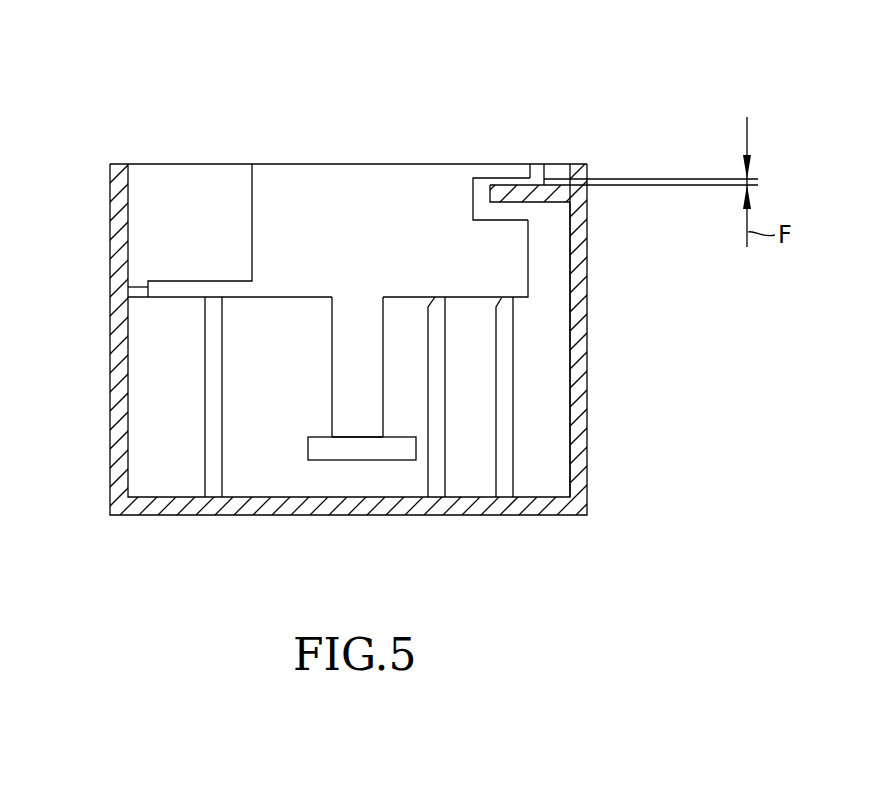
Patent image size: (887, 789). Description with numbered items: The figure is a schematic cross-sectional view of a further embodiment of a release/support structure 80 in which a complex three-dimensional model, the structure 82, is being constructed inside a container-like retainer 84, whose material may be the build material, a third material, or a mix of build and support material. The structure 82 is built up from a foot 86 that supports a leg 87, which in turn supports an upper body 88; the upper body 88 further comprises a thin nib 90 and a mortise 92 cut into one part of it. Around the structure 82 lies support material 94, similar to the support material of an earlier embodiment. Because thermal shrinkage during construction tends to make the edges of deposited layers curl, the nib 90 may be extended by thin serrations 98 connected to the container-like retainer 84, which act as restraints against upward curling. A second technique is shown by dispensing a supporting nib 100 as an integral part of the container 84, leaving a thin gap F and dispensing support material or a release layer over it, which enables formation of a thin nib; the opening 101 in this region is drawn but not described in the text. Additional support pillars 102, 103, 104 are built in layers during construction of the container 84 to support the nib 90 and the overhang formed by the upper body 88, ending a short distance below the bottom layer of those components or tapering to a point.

The release/support structure 80 is at (706, 45).
The 3-D structure 82 is at (293, 195).
The container-like retainer 84 is at (580, 375).
The foot 86 is at (402, 450).
The leg 87 is at (348, 427).
The upper body 88 is at (298, 283).
The nib 90 is at (178, 300).
The mortise 92 is at (470, 202).
The support material 94 is at (550, 298).
The serrations 98 is at (137, 282).
The supporting nib 100 is at (544, 192).
The slot 101 is at (482, 171).
The support pillar 102 is at (212, 460).
The support pillar 103 is at (438, 487).
The support pillar 104 is at (505, 470).